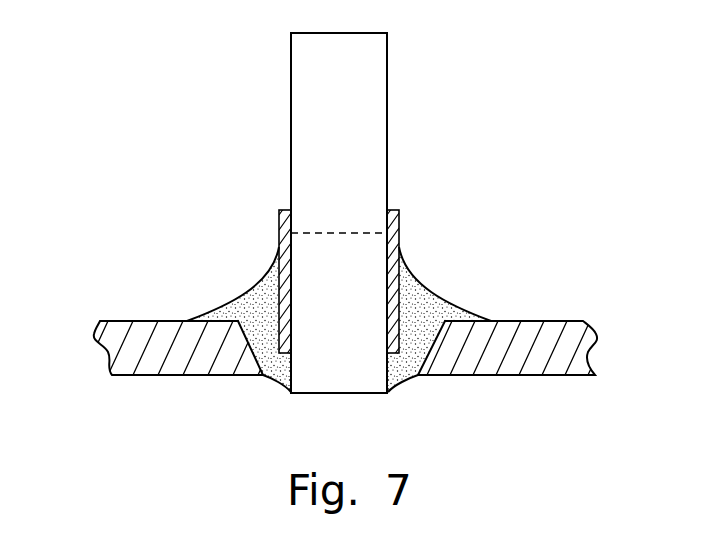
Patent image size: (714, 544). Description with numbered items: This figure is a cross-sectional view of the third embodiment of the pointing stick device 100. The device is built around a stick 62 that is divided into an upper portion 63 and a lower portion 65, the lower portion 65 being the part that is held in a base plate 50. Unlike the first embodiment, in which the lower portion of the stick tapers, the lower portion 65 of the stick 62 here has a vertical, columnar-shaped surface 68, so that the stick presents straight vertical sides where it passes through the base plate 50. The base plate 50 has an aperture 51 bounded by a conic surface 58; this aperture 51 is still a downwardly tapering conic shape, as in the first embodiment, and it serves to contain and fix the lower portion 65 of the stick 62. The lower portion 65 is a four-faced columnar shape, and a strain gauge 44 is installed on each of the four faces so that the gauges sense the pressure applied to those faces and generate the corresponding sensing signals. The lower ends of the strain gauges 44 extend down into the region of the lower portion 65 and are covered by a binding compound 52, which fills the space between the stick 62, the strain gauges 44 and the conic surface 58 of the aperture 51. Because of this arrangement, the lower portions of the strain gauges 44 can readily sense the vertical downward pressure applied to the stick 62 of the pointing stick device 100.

The pointing stick device 100 is at (164, 62).
The stick 62 is at (388, 68).
The upper portion 63 is at (363, 167).
The lower portion 65 is at (363, 324).
The strain gauge 44 is at (400, 247).
The columnar-shaped surface 68 is at (304, 309).
The base plate 50 is at (540, 338).
The aperture 51 is at (265, 326).
The binding compound 52 is at (410, 303).
The conic surface 58 is at (443, 374).